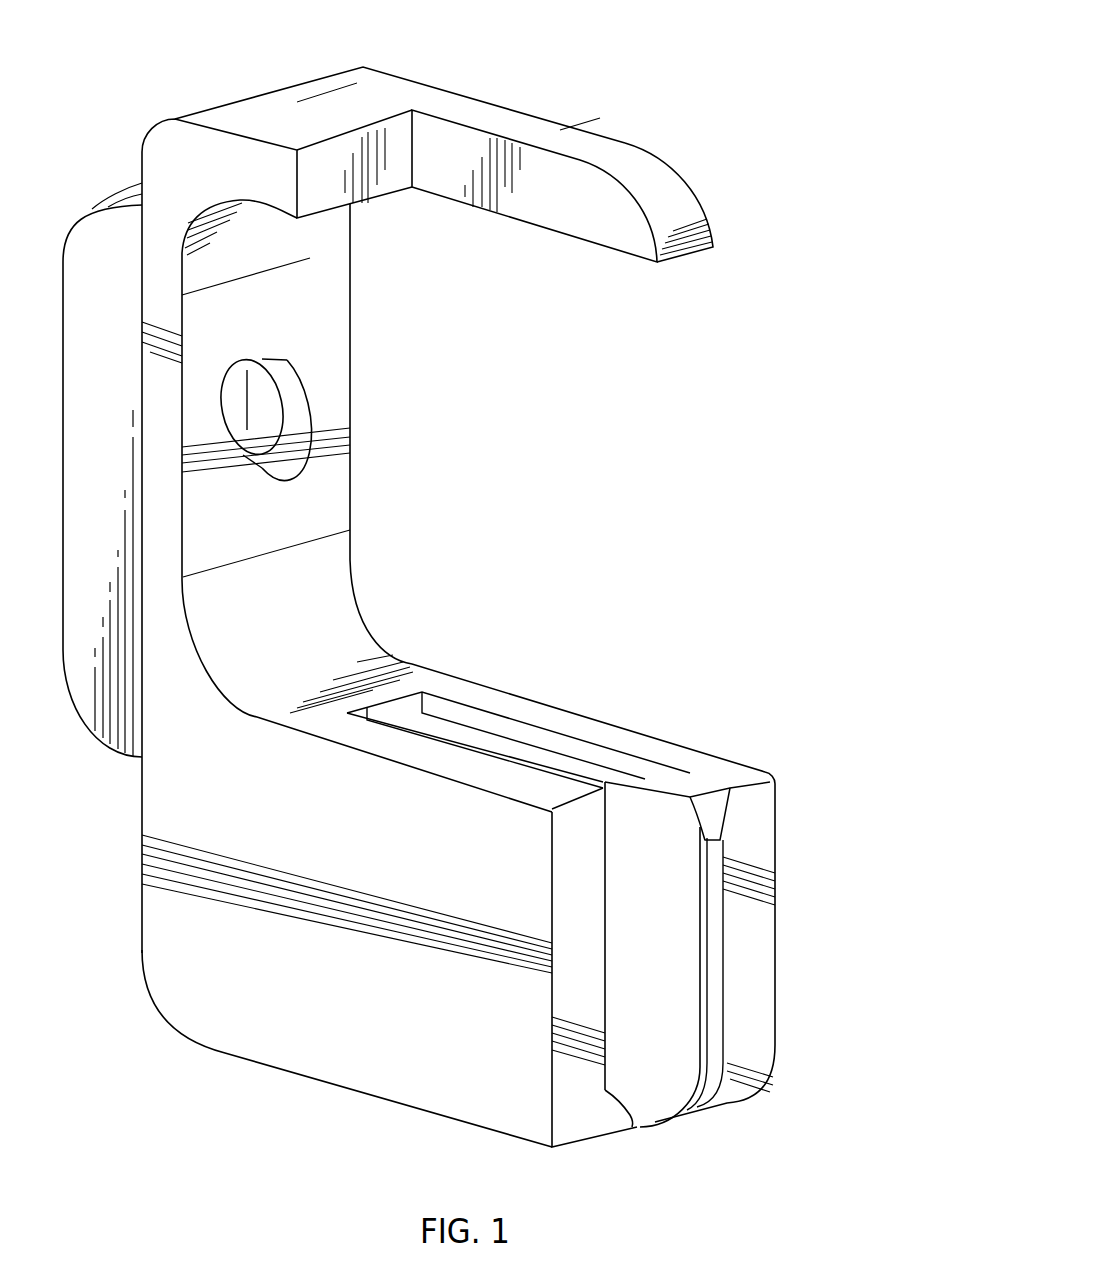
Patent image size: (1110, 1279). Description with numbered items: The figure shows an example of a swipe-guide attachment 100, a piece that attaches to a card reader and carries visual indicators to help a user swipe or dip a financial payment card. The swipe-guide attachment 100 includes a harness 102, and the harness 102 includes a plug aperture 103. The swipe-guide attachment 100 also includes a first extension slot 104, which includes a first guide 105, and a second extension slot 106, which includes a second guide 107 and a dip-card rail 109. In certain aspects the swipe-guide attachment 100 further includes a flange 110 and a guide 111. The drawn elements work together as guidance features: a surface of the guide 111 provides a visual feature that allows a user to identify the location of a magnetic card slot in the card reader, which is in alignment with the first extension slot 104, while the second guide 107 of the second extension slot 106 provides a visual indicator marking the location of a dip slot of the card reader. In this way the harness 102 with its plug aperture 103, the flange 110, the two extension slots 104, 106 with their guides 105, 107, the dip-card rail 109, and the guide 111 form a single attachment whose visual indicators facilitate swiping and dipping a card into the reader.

The swipe-guide attachment 100 is at (636, 50).
The harness 102 is at (577, 700).
The plug aperture 103 is at (287, 427).
The first extension slot 104 is at (717, 951).
The first guide 105 is at (692, 785).
The second extension slot 106 is at (487, 748).
The second guide 107 is at (647, 1013).
The dip-card rail 109 is at (620, 1123).
The flange 110 is at (122, 250).
The guide 111 is at (590, 202).